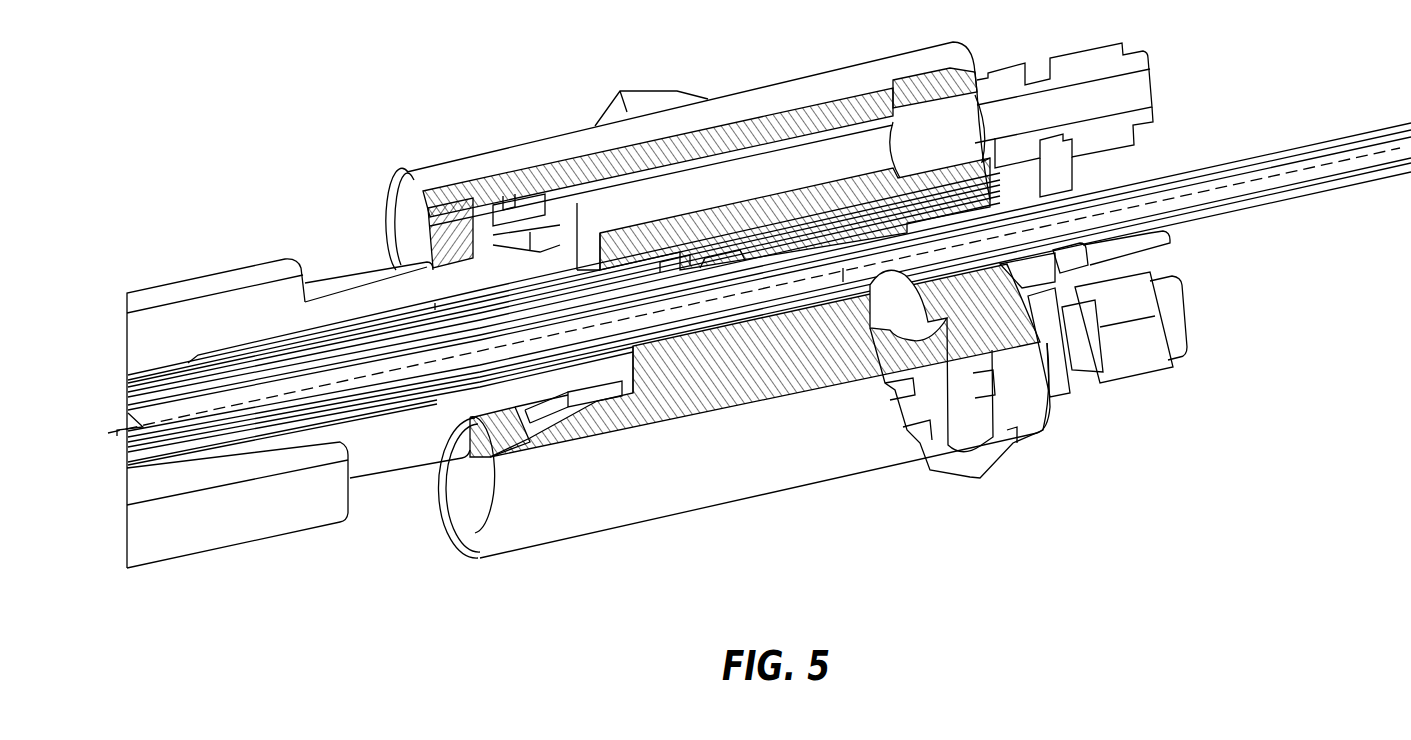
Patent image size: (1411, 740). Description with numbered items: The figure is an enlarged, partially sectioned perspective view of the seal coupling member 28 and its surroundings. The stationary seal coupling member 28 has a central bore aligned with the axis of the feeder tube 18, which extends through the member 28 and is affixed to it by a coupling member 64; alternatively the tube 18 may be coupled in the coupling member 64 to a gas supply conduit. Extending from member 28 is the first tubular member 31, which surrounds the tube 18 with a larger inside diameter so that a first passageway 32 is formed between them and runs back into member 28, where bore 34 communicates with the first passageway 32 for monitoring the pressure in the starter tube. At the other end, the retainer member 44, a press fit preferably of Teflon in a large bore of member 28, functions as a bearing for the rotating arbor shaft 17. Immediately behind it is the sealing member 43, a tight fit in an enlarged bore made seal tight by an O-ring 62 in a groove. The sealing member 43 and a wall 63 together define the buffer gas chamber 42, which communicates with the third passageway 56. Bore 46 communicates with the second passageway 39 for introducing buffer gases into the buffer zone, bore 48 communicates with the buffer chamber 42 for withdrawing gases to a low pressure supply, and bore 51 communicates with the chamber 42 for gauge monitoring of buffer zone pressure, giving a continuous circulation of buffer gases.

The arbor shaft 17 is at (335, 280).
The feeder tube 18 is at (1231, 165).
The seal coupling member 28 is at (712, 492).
The first tubular member 31 is at (800, 270).
The first passageway 32 is at (843, 273).
The bore 34 is at (893, 312).
The second passageway 39 is at (672, 262).
The buffer gas chamber 42 is at (653, 425).
The sealing member 43 is at (528, 203).
The retainer member 44 is at (400, 185).
The bore 46 is at (627, 103).
The bore 48 is at (803, 158).
The bore 51 is at (1100, 397).
The third passageway 56 is at (442, 400).
The O-ring 62 is at (507, 203).
The wall 63 is at (590, 235).
The coupling member 64 is at (1152, 175).